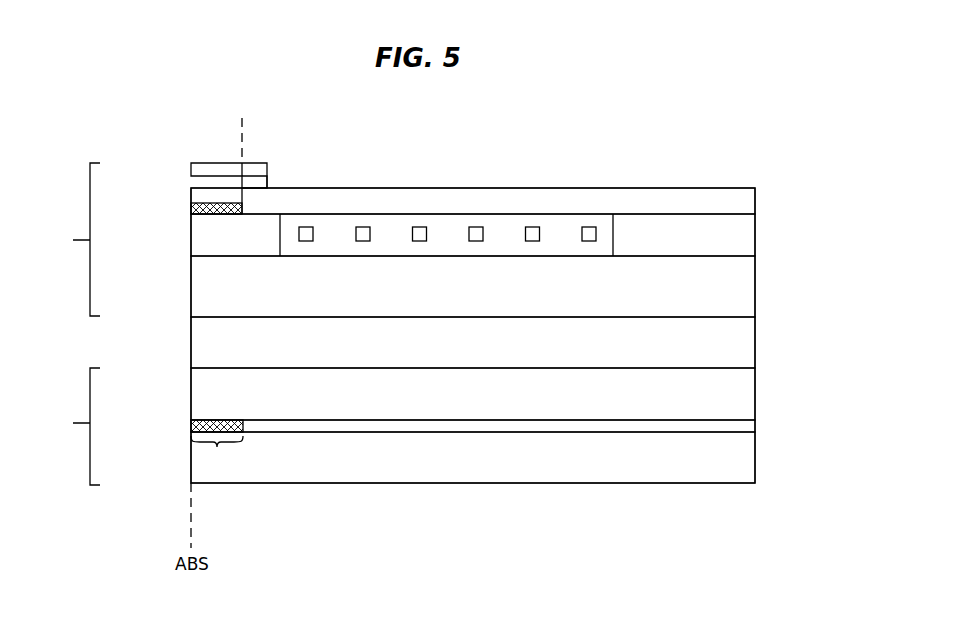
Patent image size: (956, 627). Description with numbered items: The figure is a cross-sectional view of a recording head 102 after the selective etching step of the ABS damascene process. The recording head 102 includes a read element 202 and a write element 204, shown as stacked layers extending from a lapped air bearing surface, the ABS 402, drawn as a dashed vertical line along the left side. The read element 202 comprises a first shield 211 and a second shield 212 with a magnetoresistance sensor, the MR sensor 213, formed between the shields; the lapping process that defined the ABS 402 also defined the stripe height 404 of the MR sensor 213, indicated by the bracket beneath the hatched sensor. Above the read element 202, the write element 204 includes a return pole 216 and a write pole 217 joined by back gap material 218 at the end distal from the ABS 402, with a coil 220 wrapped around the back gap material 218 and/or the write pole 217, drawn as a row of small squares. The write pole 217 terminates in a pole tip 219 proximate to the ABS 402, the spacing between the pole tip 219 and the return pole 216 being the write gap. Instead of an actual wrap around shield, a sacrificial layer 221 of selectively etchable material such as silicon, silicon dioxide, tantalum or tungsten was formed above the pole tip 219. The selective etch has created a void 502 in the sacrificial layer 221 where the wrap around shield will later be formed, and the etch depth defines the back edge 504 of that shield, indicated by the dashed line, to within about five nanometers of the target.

The recording head 102 is at (546, 110).
The read element 202 is at (70, 426).
The write element 204 is at (70, 239).
The first shield 211 is at (756, 460).
The second shield 212 is at (756, 394).
The magnetoresistance (MR) sensor 213 is at (191, 427).
The return pole 216 is at (756, 289).
The write pole 217 is at (756, 199).
The back gap material 218 is at (756, 235).
The pole tip 219 is at (191, 208).
The coil 220 is at (332, 226).
The sacrificial layer 221 is at (262, 168).
The ABS 402 is at (188, 353).
The stripe height 404 is at (217, 452).
The void 502 is at (188, 182).
The back edge 504 is at (240, 133).